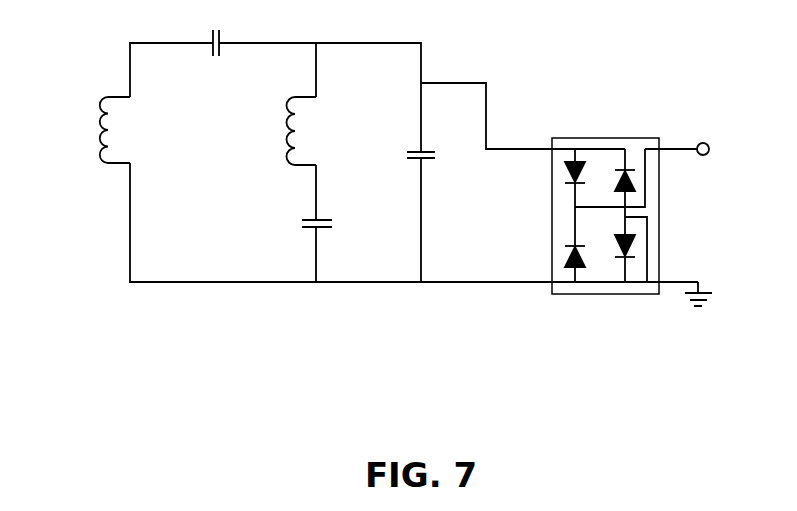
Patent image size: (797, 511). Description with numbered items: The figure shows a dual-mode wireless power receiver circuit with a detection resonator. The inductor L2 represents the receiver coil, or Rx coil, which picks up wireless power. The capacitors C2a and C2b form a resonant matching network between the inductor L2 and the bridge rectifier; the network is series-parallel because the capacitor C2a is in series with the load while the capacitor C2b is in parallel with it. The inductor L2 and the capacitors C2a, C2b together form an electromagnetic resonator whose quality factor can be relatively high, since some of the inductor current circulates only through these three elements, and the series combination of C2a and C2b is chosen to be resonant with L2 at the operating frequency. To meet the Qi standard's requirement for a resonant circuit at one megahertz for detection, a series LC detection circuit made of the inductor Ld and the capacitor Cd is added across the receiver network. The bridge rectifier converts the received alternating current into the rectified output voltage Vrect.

The inductor (receiver coil) L2 is at (77, 130).
The series capacitor C2a is at (218, 59).
The detection inductor Ld is at (283, 131).
The detection capacitor Cd is at (298, 224).
The parallel capacitor C2b is at (401, 162).
The rectified output voltage Vrect is at (701, 150).